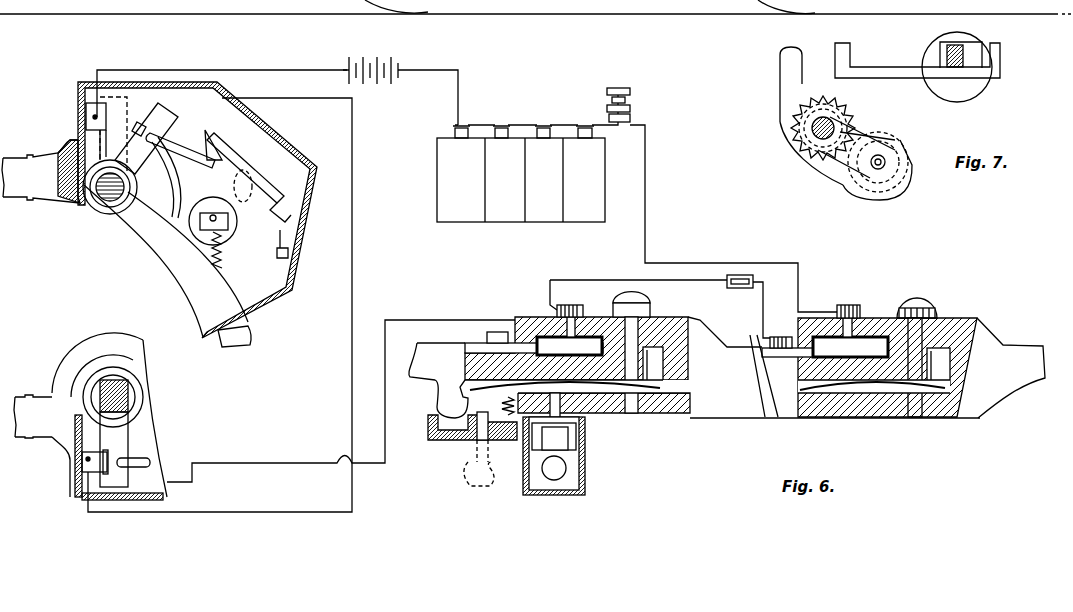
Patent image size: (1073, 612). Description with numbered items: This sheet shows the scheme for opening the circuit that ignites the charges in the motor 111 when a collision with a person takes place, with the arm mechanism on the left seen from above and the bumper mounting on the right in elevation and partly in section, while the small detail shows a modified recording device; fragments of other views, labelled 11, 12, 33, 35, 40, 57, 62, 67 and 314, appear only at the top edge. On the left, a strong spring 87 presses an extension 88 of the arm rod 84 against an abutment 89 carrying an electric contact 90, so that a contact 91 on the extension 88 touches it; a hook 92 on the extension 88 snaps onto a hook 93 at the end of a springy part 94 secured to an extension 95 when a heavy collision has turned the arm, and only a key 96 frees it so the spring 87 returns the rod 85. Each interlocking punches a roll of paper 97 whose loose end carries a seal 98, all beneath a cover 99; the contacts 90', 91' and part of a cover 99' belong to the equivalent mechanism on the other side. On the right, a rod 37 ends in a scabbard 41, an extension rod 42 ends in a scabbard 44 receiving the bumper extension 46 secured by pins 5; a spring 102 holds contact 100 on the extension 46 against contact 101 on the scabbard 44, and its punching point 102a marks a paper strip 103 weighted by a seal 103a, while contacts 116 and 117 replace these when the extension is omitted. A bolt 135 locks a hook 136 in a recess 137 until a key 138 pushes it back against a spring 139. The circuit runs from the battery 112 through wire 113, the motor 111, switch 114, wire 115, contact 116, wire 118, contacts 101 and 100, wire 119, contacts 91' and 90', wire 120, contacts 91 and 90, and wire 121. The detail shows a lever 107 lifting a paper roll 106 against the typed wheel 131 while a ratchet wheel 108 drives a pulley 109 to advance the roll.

In FIG. 6, the pin 5 is at (630, 292).
In FIG. 7, the frame part 11 is at (780, 0).
In FIG. 6, the wheel 12 is at (427, 0).
In FIG. 6, the frame part 33 is at (331, 6).
In FIG. 6, the side fender 35 is at (471, 6).
In FIG. 6, the frame part 40 is at (501, 6).
In FIG. 6, the frame part 62 is at (691, 6).
In FIG. 7, the frame part 67 is at (890, 6).
In FIG. 7, the frame part 57 is at (922, 6).
In FIG. 6, the rod 37 is at (1028, 386).
In FIG. 6, the scabbard 41 is at (943, 413).
In FIG. 6, the extension rod 42 is at (765, 452).
In FIG. 6, the scabbard 44 is at (672, 318).
In FIG. 6, the extension of bumper frame 46 is at (434, 380).
In FIG. 6, the rod 84 is at (113, 213).
In FIG. 6, the rod 85 is at (100, 212).
In FIG. 6, the spring 87 is at (145, 205).
In FIG. 6, the extension 88 is at (157, 112).
In FIG. 6, the abutment 89 is at (41, 166).
In FIG. 6, the electric contact 90 is at (73, 97).
In FIG. 6, the electric contact 91 is at (71, 134).
In FIG. 6, the hook 92 is at (192, 237).
In FIG. 6, the hook 93 is at (219, 140).
In FIG. 6, the springy metal part 94 is at (232, 166).
In FIG. 6, the extension 95 is at (243, 275).
In FIG. 6, the key 96 is at (257, 187).
In FIG. 6, the roll of paper 97 is at (205, 232).
In FIG. 6, the weight or seal 98 is at (290, 249).
In FIG. 6, the cover 99 is at (47, 213).
In FIG. 6, the cover 99' is at (108, 416).
In FIG. 6, the electric contact 90' is at (70, 463).
In FIG. 6, the electric contact 91' is at (155, 443).
In FIG. 6, the electric contact 100 is at (481, 340).
In FIG. 6, the electric contact 101 is at (547, 317).
In FIG. 6, the spring 102 is at (597, 398).
In FIG. 6, the punching point 102a is at (583, 405).
In FIG. 6, the strip of paper 103 is at (563, 440).
In FIG. 6, the weighted seal 103a is at (562, 468).
In FIG. 7, the rolled up paper strip 106 is at (907, 139).
In FIG. 7, the lever 107 is at (787, 70).
In FIG. 7, the ratchet wheel 108 is at (797, 152).
In FIG. 7, the pulley 109 is at (878, 140).
In FIG. 6, the motor 111 is at (493, 222).
In FIG. 6, the battery 112 is at (371, 59).
In FIG. 6, the wire 113 is at (460, 88).
In FIG. 6, the switch 114 is at (640, 106).
In FIG. 6, the wire 115 is at (745, 263).
In FIG. 6, the contact 116 is at (860, 345).
In FIG. 6, the contact 117 is at (766, 340).
In FIG. 6, the wire 118 is at (638, 286).
In FIG. 6, the wire 119 is at (232, 463).
In FIG. 6, the wire 120 is at (353, 155).
In FIG. 6, the wire 121 is at (285, 70).
In FIG. 7, the wheel 131 is at (972, 88).
In FIG. 6, the bolt 135 is at (476, 482).
In FIG. 6, the hook 136 is at (453, 413).
In FIG. 6, the recess 137 is at (430, 440).
In FIG. 6, the key 138 is at (492, 484).
In FIG. 6, the spring 139 is at (508, 412).
In FIG. 6, the tongue 314 is at (253, 331).